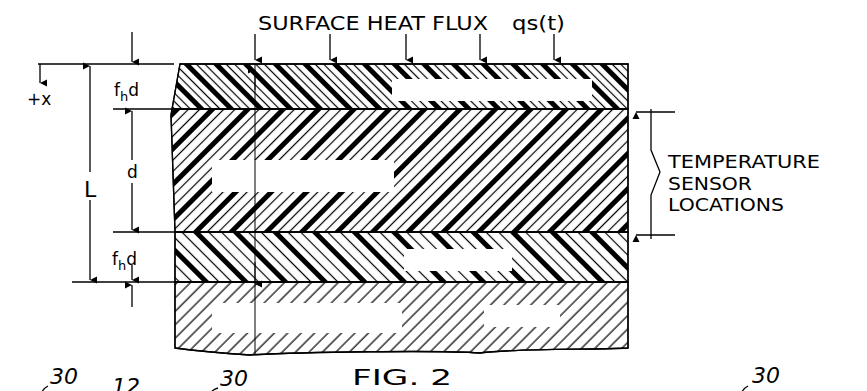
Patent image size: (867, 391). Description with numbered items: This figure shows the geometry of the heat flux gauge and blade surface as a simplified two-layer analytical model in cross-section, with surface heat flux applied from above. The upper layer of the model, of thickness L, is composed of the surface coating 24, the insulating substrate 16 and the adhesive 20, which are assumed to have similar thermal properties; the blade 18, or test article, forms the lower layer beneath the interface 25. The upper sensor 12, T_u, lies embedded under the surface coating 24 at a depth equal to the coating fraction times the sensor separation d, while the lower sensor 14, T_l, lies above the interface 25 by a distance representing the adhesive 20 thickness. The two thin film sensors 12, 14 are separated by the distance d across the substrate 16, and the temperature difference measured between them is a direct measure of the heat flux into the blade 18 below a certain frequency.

The surface coating 24 is at (614, 72).
The upper temperature sensor 12 is at (728, 117).
The lower temperature sensor 14 is at (732, 239).
The insulating substrate 16 is at (548, 187).
The adhesive 20 is at (608, 262).
The interface 25 is at (628, 283).
The blade 18 is at (612, 333).